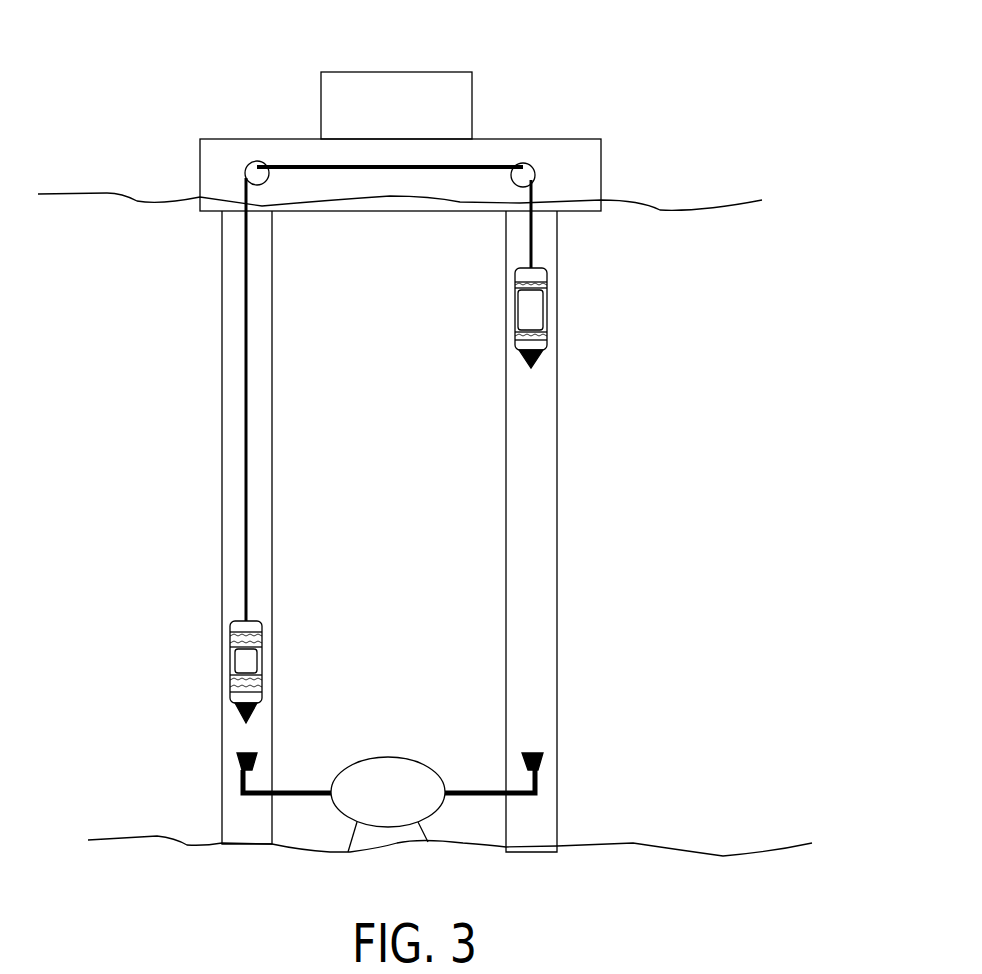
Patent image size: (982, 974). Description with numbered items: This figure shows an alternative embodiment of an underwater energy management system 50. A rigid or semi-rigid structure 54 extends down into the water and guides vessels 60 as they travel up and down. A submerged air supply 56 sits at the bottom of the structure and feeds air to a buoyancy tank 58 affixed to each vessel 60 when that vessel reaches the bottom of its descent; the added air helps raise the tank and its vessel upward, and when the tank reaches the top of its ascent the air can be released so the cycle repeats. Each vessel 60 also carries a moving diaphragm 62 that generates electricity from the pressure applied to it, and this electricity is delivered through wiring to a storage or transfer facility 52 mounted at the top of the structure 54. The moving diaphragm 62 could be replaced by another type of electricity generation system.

The underwater energy management system 50 is at (585, 103).
The storage or transfer facility 52 is at (377, 108).
The rigid or semi-rigid structure 54 is at (268, 533).
The submerged air supply 56 is at (408, 773).
The buoyancy tank 58 is at (531, 368).
The vessel 60 is at (546, 322).
The moving diaphragm 62 is at (507, 293).